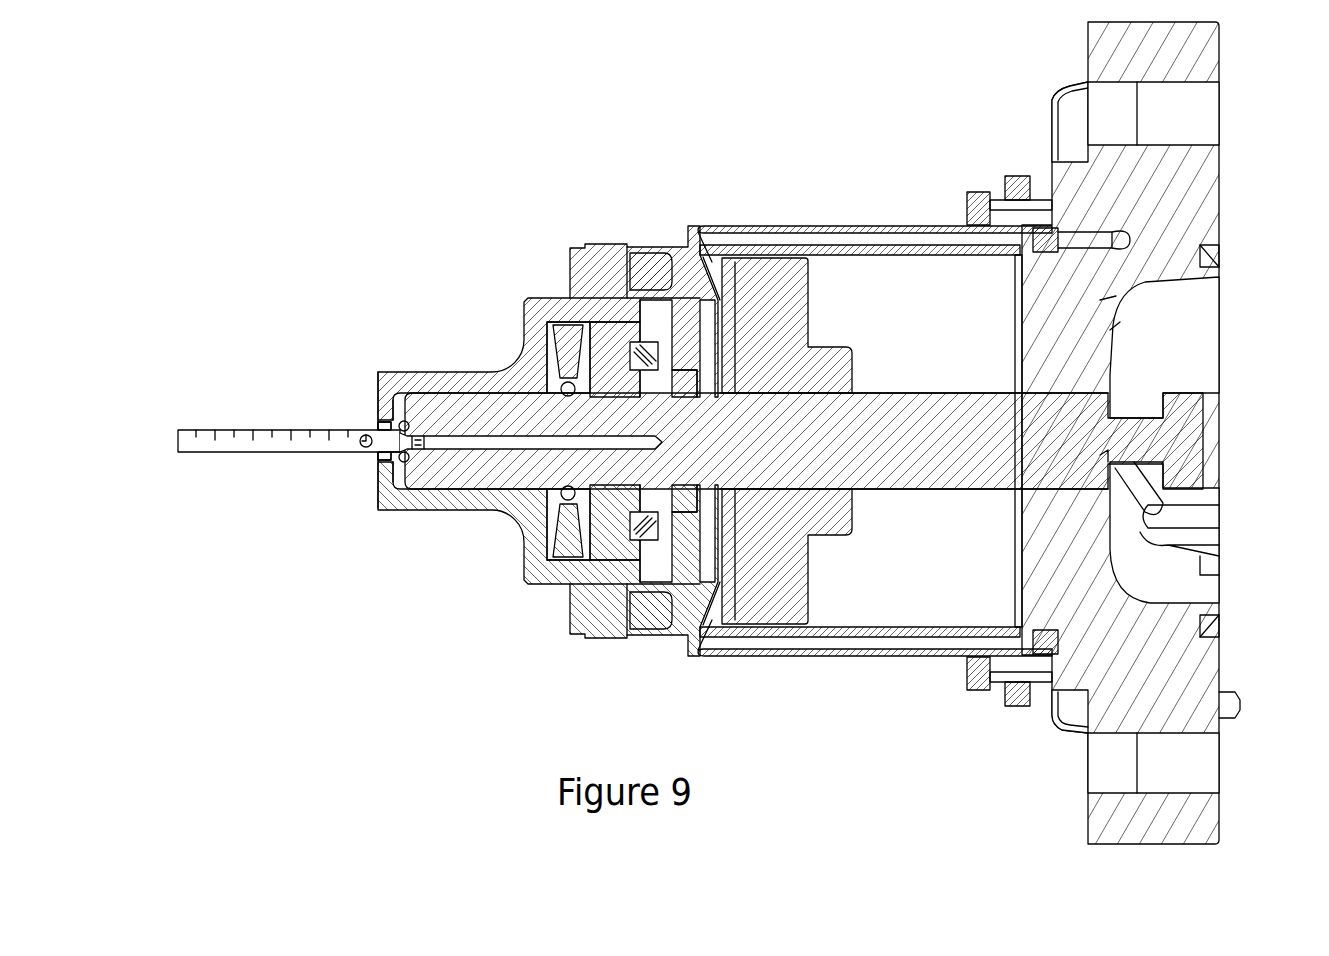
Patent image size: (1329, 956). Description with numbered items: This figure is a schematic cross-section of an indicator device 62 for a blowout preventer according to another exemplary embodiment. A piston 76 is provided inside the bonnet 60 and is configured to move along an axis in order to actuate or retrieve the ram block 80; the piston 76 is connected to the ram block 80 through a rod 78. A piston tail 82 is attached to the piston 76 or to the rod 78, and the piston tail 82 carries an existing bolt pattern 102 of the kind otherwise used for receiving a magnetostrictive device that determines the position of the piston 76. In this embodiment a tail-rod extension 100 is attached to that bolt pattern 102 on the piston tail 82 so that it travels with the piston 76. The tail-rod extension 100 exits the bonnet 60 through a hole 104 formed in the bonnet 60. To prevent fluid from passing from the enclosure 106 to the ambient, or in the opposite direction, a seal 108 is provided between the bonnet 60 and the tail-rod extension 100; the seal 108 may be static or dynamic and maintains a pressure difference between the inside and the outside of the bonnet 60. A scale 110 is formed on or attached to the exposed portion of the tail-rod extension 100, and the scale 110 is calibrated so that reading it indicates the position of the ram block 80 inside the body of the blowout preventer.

The bonnet 60 is at (822, 225).
The indicator device 62 is at (318, 338).
The piston 76 is at (790, 582).
The rod 78 is at (928, 410).
The ram block 80 is at (1185, 345).
The piston tail 82 is at (495, 422).
The tail-rod extension 100 is at (258, 455).
The bolt pattern 102 is at (396, 418).
The hole 104 is at (378, 428).
The enclosure 106 is at (396, 468).
The seal 108 is at (378, 457).
The scale 110 is at (222, 437).